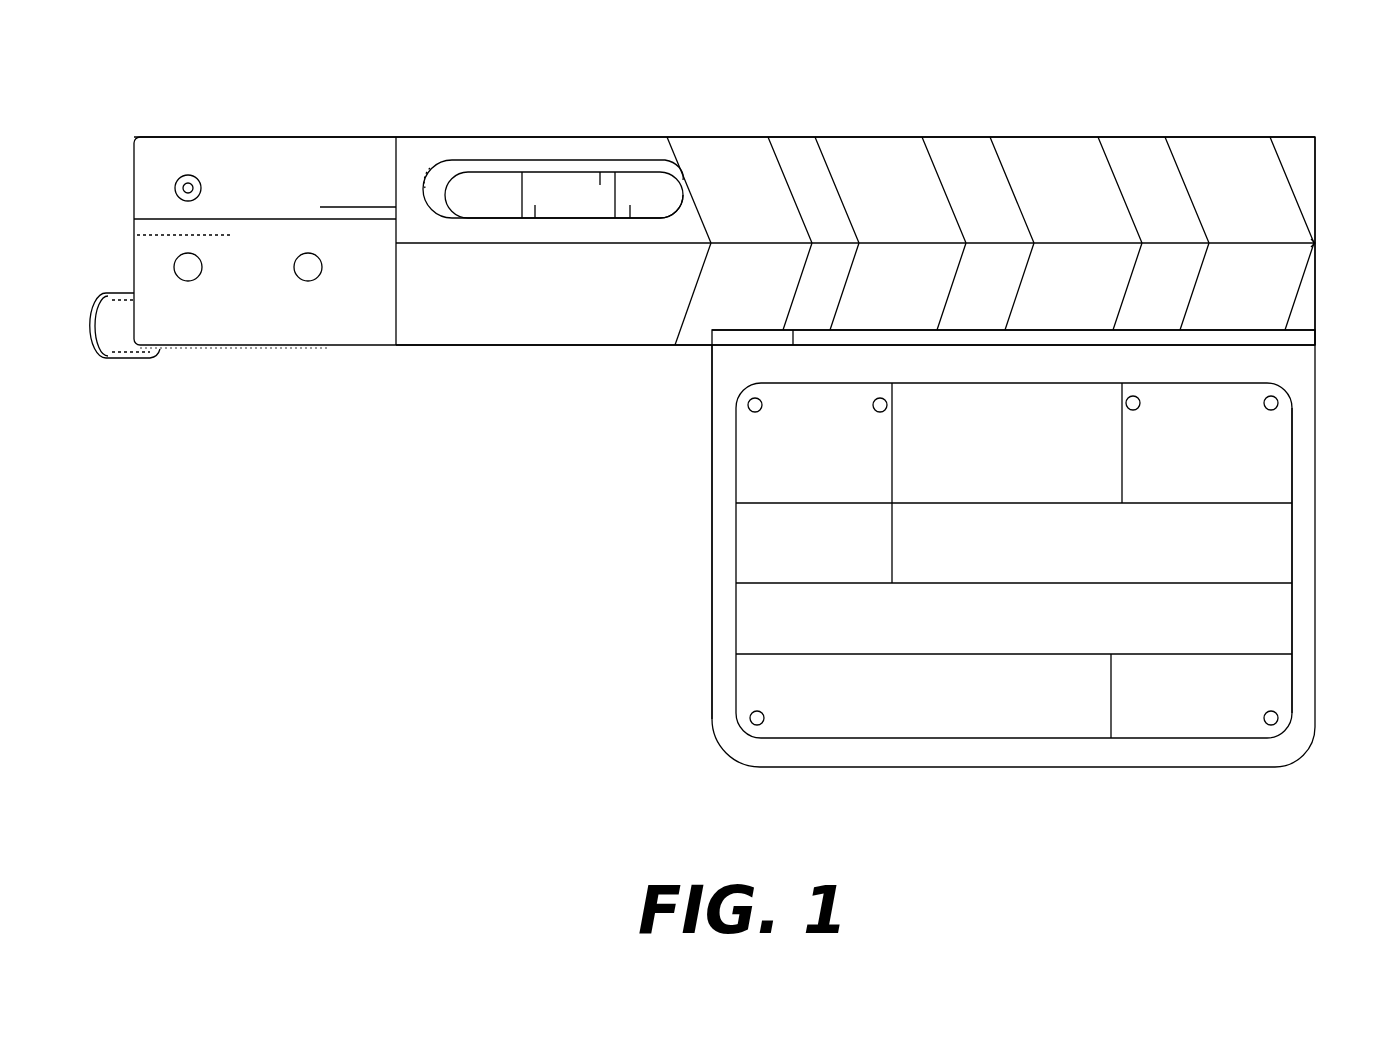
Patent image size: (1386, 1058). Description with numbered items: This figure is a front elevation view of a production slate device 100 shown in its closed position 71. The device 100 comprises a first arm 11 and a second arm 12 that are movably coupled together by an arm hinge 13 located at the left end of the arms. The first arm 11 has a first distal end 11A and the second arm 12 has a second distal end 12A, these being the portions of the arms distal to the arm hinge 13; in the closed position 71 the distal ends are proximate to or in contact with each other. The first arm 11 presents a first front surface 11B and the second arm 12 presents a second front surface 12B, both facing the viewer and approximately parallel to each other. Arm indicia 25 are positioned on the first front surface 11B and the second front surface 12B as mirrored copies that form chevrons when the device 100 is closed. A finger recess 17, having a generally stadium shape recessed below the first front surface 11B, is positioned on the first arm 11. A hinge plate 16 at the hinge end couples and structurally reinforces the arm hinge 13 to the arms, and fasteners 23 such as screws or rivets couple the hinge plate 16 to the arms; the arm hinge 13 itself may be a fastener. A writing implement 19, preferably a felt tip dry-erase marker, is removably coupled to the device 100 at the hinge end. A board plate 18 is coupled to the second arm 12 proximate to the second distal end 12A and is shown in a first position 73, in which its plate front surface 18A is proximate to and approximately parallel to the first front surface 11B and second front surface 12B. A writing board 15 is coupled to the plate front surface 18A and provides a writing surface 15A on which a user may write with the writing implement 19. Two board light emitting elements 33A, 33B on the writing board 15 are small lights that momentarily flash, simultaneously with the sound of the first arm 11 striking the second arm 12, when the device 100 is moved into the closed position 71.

The production slate device 100 is at (543, 85).
The first arm 11 is at (588, 152).
The first distal end 11A is at (1317, 178).
The first front surface 11B is at (972, 172).
The second arm 12 is at (620, 330).
The second distal end 12A is at (1318, 287).
The second front surface 12B is at (450, 318).
The arm hinge 13 is at (201, 186).
The writing board 15 is at (770, 548).
The writing surface 15A is at (1258, 530).
The hinge plate 16 is at (330, 163).
The finger recess 17 is at (503, 190).
The board plate 18 is at (737, 733).
The plate front surface 18A is at (1277, 368).
The writing implement 19 is at (125, 350).
The fastener 23 is at (198, 277).
The arm indicia 25 is at (731, 176).
The board light emitting element 33A is at (885, 411).
The board light emitting element 33B is at (1137, 409).
The closed position 71 is at (1323, 243).
The first position 73 is at (693, 603).